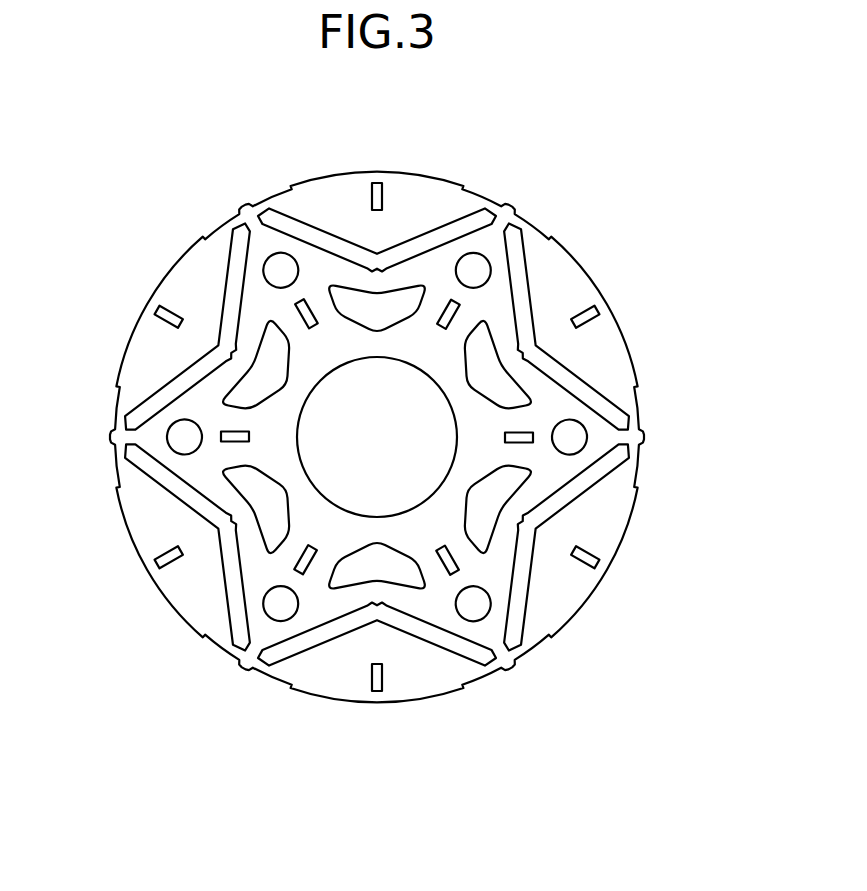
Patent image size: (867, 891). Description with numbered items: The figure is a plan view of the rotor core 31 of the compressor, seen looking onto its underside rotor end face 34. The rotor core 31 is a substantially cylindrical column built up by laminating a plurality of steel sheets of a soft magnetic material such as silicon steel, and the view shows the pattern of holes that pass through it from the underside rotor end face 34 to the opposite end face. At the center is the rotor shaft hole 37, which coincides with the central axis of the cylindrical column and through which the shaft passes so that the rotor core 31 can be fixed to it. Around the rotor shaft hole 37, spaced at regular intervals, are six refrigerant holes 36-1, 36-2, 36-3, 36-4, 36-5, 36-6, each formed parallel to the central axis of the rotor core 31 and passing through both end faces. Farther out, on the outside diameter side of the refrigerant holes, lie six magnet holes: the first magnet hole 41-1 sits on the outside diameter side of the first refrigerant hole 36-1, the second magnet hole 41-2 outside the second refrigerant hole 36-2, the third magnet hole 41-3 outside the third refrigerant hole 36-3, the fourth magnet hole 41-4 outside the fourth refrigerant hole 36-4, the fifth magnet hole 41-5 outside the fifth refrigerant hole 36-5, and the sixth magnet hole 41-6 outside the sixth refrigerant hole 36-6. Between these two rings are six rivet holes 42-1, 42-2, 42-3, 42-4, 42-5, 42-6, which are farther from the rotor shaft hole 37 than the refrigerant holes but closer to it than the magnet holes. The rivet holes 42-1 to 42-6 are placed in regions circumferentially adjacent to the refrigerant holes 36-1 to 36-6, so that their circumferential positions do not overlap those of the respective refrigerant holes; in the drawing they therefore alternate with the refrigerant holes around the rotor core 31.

The rotor core 31 is at (505, 206).
The underside rotor end face 34 is at (395, 188).
The rotor shaft hole 37 is at (362, 357).
The first magnet hole 41-1 is at (302, 218).
The second magnet hole 41-2 is at (525, 288).
The third magnet hole 41-3 is at (573, 503).
The fourth magnet hole 41-4 is at (417, 636).
The fifth magnet hole 41-5 is at (227, 592).
The sixth magnet hole 41-6 is at (225, 290).
The first refrigerant hole 36-1 is at (398, 285).
The second refrigerant hole 36-2 is at (493, 320).
The third refrigerant hole 36-3 is at (490, 543).
The fourth refrigerant hole 36-4 is at (327, 593).
The fifth refrigerant hole 36-5 is at (264, 556).
The sixth refrigerant hole 36-6 is at (222, 383).
The rivet hole 42-1 is at (474, 254).
The rivet hole 42-2 is at (587, 438).
The rivet hole 42-3 is at (481, 620).
The rivet hole 42-4 is at (263, 607).
The rivet hole 42-5 is at (167, 437).
The rivet hole 42-6 is at (268, 257).